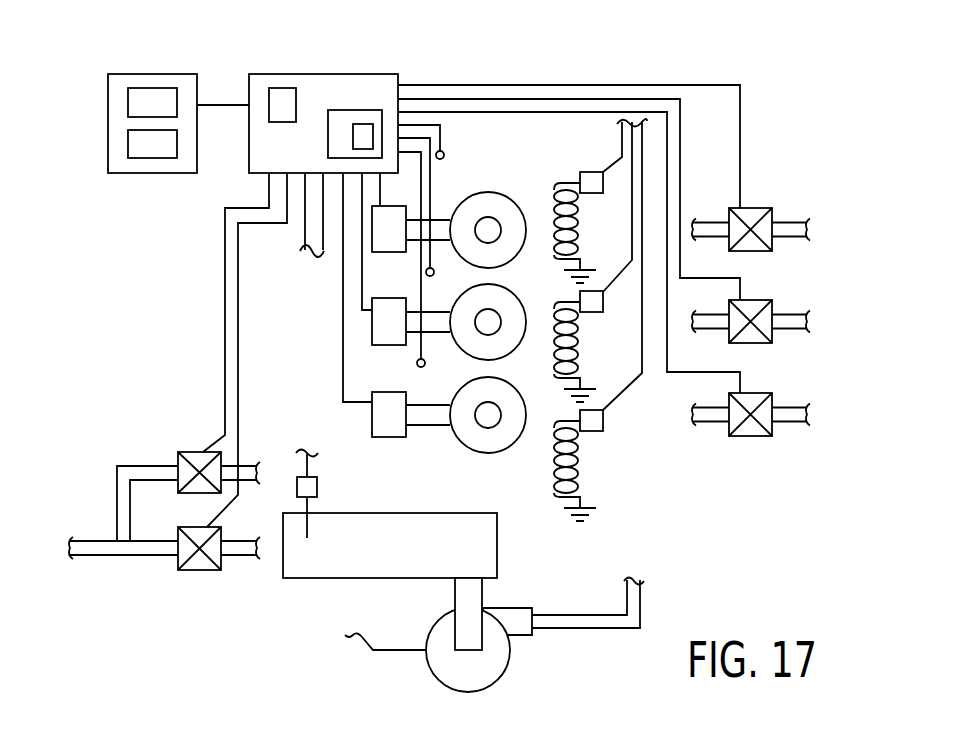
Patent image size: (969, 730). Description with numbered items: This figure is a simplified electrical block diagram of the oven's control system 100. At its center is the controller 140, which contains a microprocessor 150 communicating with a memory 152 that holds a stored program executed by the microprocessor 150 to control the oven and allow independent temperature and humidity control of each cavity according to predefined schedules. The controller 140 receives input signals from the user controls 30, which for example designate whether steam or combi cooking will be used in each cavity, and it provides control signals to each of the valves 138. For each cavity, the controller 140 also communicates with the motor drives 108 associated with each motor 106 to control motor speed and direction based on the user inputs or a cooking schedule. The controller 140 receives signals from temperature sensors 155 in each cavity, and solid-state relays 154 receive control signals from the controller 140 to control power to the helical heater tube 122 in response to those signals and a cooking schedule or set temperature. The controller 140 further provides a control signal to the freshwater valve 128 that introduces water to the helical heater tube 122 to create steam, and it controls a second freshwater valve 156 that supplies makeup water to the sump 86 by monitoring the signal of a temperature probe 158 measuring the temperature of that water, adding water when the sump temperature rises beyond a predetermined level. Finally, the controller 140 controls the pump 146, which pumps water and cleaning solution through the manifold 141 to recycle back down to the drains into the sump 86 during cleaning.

The user controls 30 is at (152, 74).
The sump 86 is at (417, 558).
The appliance control system 100 is at (688, 53).
The motor 106 is at (490, 193).
The motor drive 108 is at (388, 253).
The helical heater tube 122 is at (568, 184).
The freshwater valve 128 is at (198, 452).
The valve 138 is at (750, 207).
The controller 140 is at (249, 125).
The manifold 141 is at (641, 607).
The pump 146 is at (510, 657).
The microprocessor 150 is at (269, 102).
The memory 152 is at (328, 133).
The solid-state relay 154 is at (362, 125).
The temperature sensor 155 is at (443, 152).
The freshwater valve 156 is at (198, 570).
The temperature probe 158 is at (317, 490).